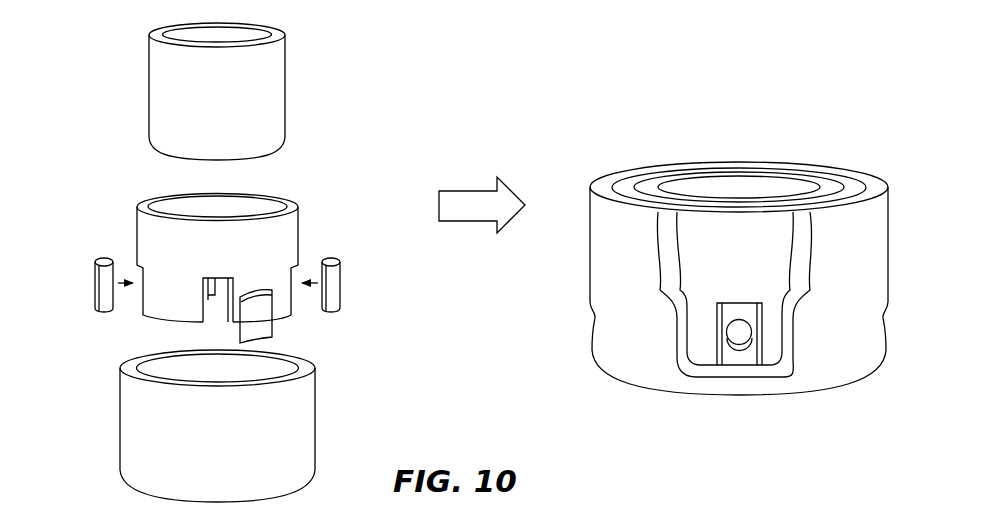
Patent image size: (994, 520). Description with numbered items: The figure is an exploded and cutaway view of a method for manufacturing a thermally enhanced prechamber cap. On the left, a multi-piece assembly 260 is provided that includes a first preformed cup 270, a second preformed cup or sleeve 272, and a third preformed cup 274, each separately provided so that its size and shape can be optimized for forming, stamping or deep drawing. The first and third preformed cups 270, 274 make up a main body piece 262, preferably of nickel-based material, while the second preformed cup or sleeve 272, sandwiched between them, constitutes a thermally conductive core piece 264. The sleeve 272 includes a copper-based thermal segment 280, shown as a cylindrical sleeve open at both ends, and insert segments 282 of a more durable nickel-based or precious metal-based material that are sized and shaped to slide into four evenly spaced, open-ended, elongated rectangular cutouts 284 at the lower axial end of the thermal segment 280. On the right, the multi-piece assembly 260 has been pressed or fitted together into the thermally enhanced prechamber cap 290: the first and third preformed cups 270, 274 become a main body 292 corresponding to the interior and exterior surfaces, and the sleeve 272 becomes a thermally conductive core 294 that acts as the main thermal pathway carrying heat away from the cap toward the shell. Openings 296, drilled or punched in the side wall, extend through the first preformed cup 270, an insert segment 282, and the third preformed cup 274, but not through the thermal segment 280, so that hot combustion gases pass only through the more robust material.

The multi-piece assembly 260 is at (106, 109).
The main body piece 262 is at (77, 443).
The thermally conductive core piece 264 is at (373, 185).
The first preformed cup 270 is at (274, 94).
The second preformed cup or sleeve 272 is at (748, 228).
The third preformed cup 274 is at (295, 410).
The thermal segment 280 is at (157, 227).
The insert segments 282 is at (95, 283).
The cutouts 284 is at (237, 313).
The thermally enhanced prechamber cap 290 is at (592, 149).
The main body 292 is at (589, 378).
The thermally conductive core 294 is at (773, 223).
The openings 296 is at (592, 322).